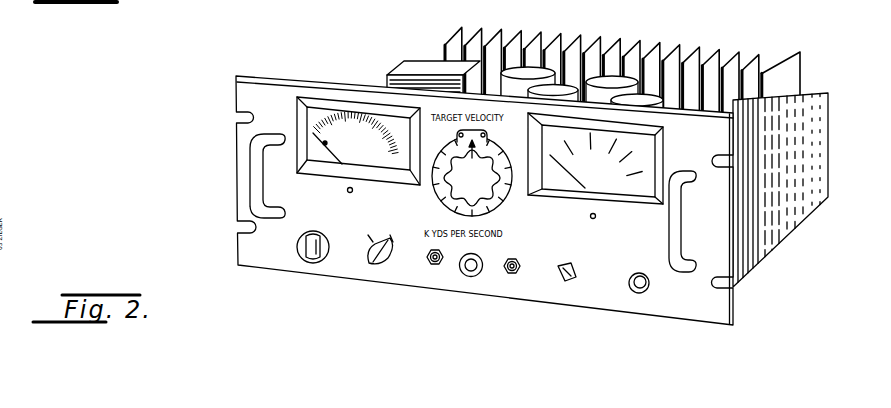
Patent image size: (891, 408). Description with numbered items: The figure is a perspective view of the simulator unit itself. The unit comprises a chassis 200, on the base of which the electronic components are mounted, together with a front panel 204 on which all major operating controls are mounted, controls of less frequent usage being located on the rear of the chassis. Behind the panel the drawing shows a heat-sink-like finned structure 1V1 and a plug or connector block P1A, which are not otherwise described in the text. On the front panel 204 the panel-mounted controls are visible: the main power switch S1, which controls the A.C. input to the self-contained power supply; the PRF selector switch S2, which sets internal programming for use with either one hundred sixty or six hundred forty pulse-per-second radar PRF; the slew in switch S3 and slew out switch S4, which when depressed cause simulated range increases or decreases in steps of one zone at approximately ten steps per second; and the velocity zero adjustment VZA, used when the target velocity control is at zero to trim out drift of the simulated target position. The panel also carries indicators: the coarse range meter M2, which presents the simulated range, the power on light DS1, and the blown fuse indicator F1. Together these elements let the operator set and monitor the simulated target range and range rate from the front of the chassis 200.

The front panel 204 is at (236, 152).
The chassis 200 is at (786, 236).
The heat sink fins 1V1 is at (790, 76).
The plug P1A is at (462, 41).
The coarse range meter M2 is at (333, 100).
The blown fuse indicator F1 is at (302, 262).
The PRF selector switch S2 is at (372, 264).
The slew in switch S3 is at (427, 268).
The velocity zero adjustment VZA is at (462, 278).
The slew out switch S4 is at (508, 276).
The main power switch S1 is at (557, 281).
The power on light DS1 is at (630, 291).